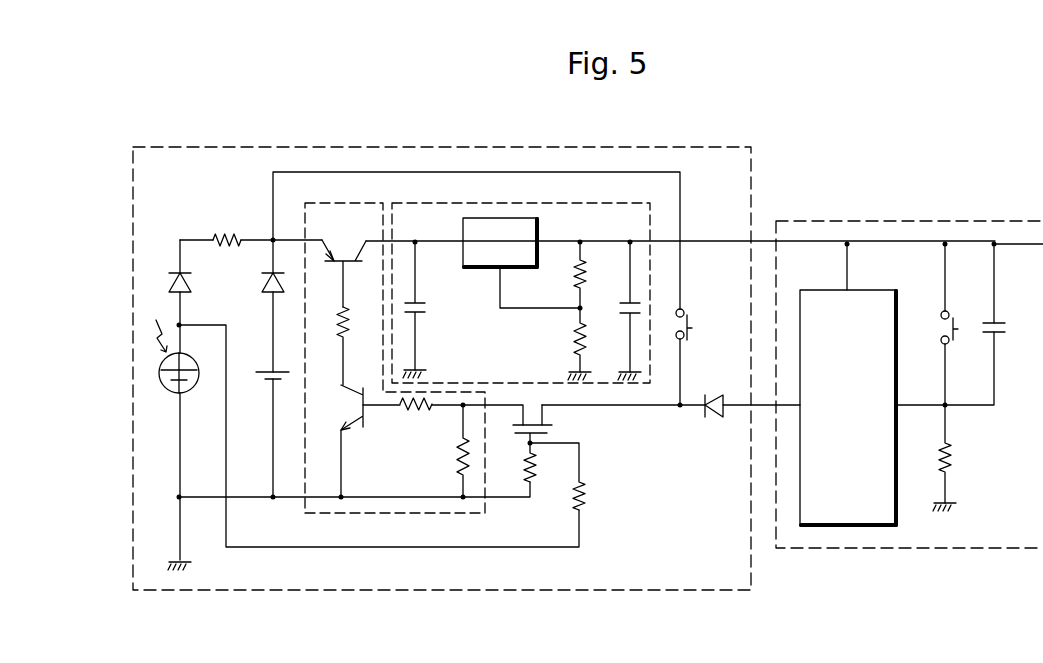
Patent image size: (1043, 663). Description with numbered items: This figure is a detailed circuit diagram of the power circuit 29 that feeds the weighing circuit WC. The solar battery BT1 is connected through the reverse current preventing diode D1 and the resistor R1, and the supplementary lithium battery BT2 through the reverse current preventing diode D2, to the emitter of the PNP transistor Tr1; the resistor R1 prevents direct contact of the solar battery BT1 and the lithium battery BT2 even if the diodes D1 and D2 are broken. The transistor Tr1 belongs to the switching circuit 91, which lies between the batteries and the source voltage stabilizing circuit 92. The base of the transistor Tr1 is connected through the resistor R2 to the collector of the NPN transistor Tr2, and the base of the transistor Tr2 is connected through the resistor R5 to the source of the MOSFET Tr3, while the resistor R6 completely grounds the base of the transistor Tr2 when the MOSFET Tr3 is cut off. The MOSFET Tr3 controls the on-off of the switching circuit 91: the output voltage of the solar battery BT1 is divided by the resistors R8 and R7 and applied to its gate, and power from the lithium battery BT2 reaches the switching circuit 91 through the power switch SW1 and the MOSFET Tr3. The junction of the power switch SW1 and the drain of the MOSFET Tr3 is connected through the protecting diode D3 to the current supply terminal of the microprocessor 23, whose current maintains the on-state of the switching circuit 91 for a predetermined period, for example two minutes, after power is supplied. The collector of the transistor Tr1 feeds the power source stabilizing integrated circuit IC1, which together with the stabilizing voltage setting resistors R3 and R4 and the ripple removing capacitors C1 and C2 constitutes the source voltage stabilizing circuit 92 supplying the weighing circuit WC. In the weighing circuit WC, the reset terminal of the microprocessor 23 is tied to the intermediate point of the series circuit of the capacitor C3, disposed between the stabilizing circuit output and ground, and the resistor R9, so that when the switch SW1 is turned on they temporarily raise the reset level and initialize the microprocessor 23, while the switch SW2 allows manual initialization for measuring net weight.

The power circuit 29 is at (712, 151).
The switching circuit 91 is at (373, 203).
The source voltage stabilizing circuit 92 is at (621, 203).
The microprocessor 23 is at (857, 530).
The weighing circuit WC is at (895, 221).
The resistor R1 is at (226, 226).
The resistor R2 is at (340, 330).
The stabilizing voltage setting resistor R3 is at (572, 280).
The stabilizing voltage setting resistor R4 is at (572, 345).
The resistor R5 is at (412, 419).
The resistor R6 is at (457, 452).
The resistor R7 is at (538, 472).
The resistor R8 is at (588, 497).
The resistor R9 is at (954, 450).
The ripple removing capacitor C1 is at (426, 309).
The ripple removing capacitor C2 is at (622, 300).
The capacitor C3 is at (1006, 327).
The reverse current preventing diode D1 is at (169, 284).
The reverse current preventing diode D2 is at (263, 284).
The protecting diode D3 is at (712, 419).
The solar battery BT1 is at (187, 356).
The lithium battery BT2 is at (258, 372).
The PNP transistor Tr1 is at (345, 250).
The NPN transistor Tr2 is at (352, 432).
The MOSFET Tr3 is at (553, 428).
The power source stabilizing integrated circuit IC1 is at (503, 218).
The power switch SW1 is at (700, 307).
The switch SW2 is at (928, 312).